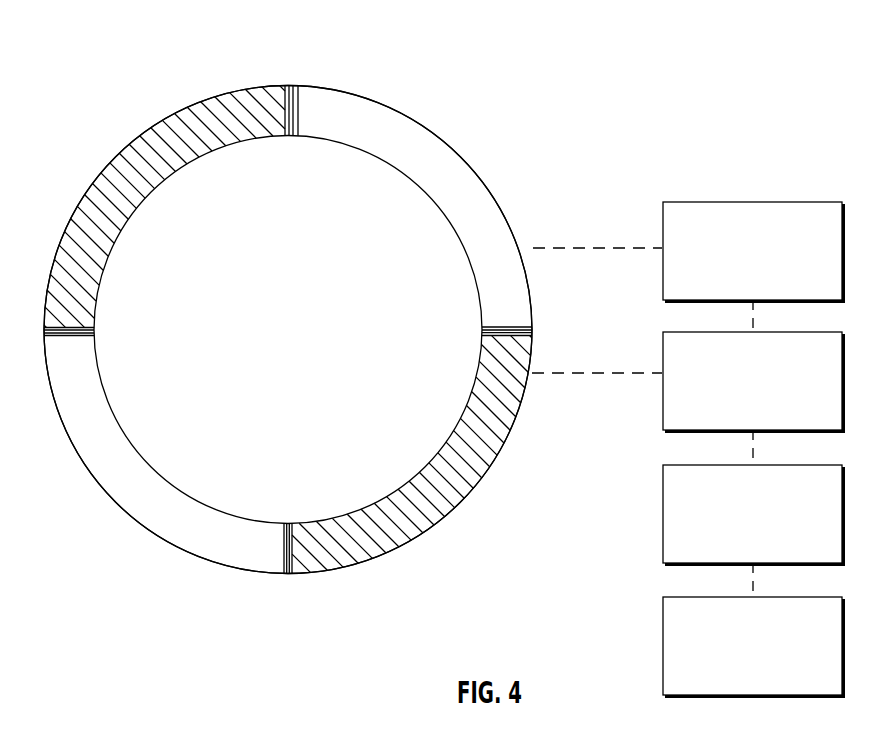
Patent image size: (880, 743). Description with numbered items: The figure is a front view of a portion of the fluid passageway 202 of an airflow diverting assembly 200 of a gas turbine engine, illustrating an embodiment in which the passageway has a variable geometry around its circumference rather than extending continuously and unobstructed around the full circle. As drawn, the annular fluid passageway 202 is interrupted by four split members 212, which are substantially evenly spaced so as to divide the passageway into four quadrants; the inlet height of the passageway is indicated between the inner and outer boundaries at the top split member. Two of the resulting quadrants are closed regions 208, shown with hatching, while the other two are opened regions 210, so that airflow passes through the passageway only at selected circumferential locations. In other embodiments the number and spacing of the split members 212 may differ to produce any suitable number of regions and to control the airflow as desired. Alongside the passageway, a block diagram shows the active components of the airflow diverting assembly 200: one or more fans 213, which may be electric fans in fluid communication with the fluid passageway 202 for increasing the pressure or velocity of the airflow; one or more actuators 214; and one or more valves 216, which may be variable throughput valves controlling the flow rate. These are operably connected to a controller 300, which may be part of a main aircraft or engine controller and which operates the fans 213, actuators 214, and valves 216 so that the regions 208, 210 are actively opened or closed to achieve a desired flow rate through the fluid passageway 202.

The airflow diverting assembly 200 is at (134, 70).
The fluid passageway 202 is at (447, 162).
The closed regions 208 is at (213, 113).
The opened regions 210 is at (410, 147).
The split member 212 is at (298, 187).
The fan(s) 213 is at (736, 281).
The actuator(s) 214 is at (736, 412).
The valve(s) 216 is at (736, 545).
The controller 300 is at (736, 677).